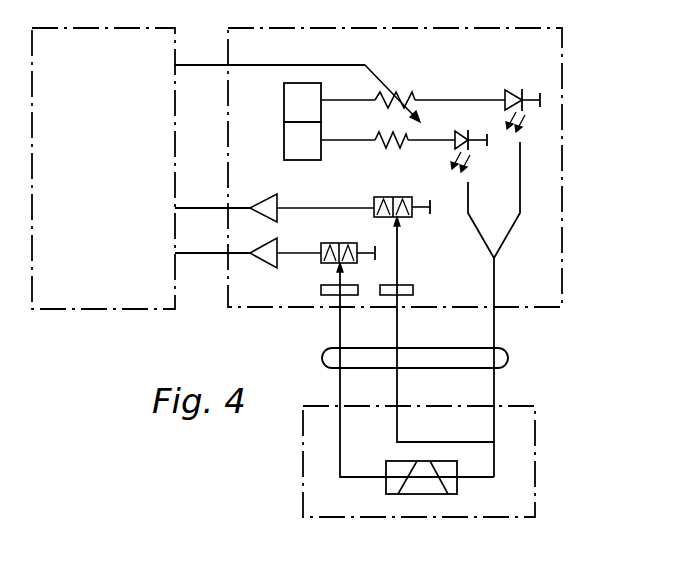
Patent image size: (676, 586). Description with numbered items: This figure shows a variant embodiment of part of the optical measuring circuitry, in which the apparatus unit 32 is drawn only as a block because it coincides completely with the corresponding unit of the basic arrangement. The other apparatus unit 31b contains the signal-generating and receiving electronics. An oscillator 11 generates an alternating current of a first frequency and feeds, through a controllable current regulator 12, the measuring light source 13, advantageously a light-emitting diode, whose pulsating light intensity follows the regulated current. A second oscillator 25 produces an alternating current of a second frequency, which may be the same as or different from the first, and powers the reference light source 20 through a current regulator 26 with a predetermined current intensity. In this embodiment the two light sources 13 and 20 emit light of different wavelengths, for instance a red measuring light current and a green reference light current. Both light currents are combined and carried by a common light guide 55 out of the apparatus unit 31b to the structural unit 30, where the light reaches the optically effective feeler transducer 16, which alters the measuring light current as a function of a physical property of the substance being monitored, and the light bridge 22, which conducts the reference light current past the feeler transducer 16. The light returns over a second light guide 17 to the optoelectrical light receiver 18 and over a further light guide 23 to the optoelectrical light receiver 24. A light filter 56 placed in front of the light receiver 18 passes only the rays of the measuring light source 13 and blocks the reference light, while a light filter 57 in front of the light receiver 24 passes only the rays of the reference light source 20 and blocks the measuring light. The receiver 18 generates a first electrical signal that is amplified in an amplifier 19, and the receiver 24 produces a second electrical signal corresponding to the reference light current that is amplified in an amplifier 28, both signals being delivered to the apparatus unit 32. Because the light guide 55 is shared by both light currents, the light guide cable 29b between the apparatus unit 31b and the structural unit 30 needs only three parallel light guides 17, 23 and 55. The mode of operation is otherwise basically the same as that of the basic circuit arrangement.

The oscillator 11 is at (283, 100).
The second oscillator 25 is at (283, 140).
The controllable current regulator 12 is at (402, 97).
The current regulator 26 is at (382, 147).
The light source 13 is at (513, 90).
The second light source 20 is at (452, 151).
The common light guide 55 is at (497, 332).
The amplifier 28 is at (262, 199).
The amplifier 19 is at (265, 270).
The optoelectrical light receiver 24 is at (395, 196).
The optoelectrical light receiver 18 is at (342, 243).
The light filter 56 is at (330, 297).
The light filter 57 is at (402, 285).
The second light guide 17 is at (345, 333).
The further light guide 23 is at (400, 335).
The light bridge 22 is at (443, 442).
The light guide cable 29b is at (510, 360).
The feeler transducer 16 is at (457, 486).
The structural unit 30 is at (537, 462).
The apparatus unit 31b is at (563, 200).
The apparatus unit 32 is at (95, 311).